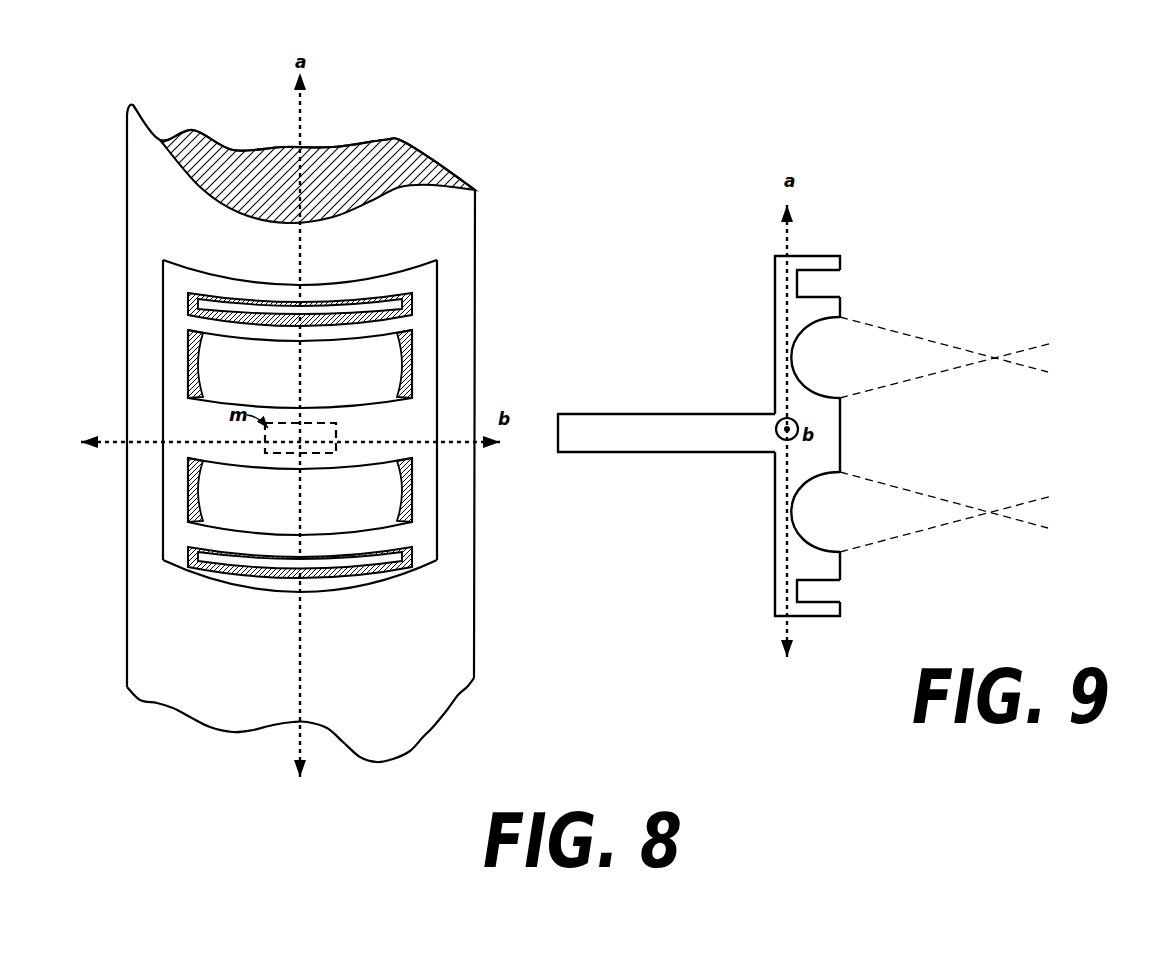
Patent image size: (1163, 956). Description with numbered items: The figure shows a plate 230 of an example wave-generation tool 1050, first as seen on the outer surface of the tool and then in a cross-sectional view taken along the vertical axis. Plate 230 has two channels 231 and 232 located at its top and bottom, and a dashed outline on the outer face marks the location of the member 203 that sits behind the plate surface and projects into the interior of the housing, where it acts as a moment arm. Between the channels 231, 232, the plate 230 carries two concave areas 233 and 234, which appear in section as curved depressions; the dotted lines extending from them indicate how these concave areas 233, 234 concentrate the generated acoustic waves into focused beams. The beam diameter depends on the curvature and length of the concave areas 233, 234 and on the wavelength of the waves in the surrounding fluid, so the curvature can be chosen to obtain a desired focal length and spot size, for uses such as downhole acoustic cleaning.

In FIG. 8, the wave-generation tool 1050 is at (100, 191).
In FIG. 8, the plate 230 is at (300, 426).
In FIG. 9, the plate 230 is at (757, 388).
In FIG. 8, the channel 231 is at (380, 308).
In FIG. 9, the channel 231 is at (814, 283).
In FIG. 8, the channel 232 is at (368, 568).
In FIG. 9, the channel 232 is at (814, 591).
In FIG. 8, the concave area 233 is at (300, 369).
In FIG. 9, the concave area 233 is at (806, 377).
In FIG. 8, the concave area 234 is at (300, 496).
In FIG. 9, the concave area 234 is at (809, 532).
In FIG. 9, the member 203 is at (653, 457).